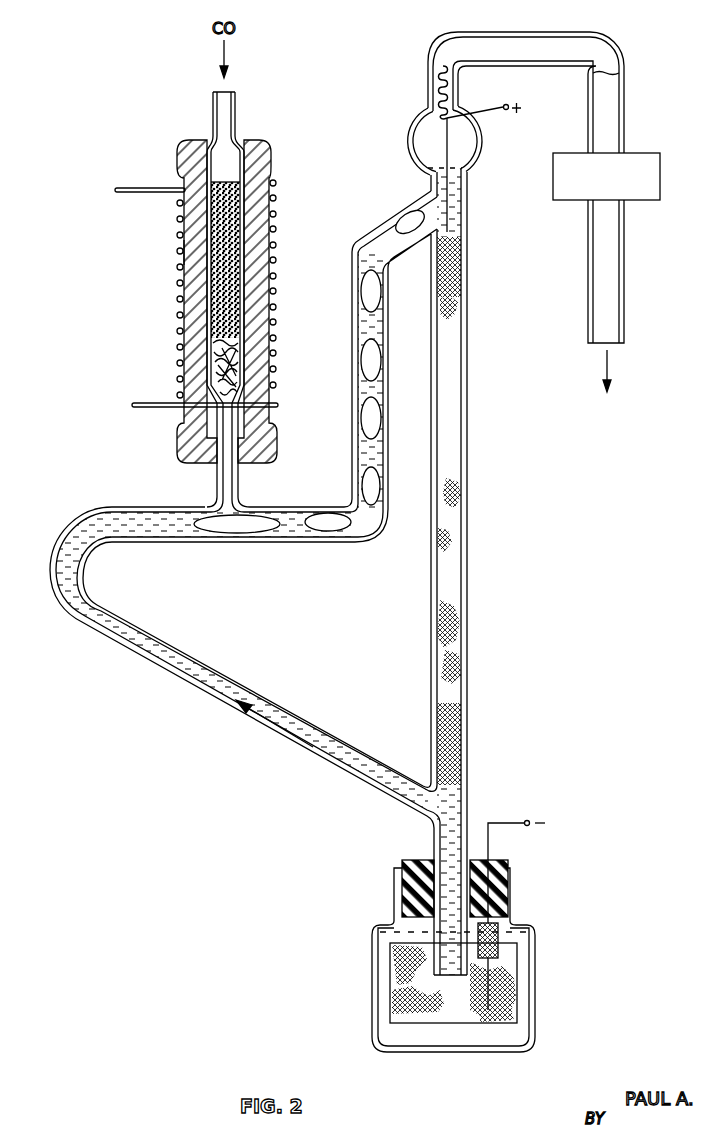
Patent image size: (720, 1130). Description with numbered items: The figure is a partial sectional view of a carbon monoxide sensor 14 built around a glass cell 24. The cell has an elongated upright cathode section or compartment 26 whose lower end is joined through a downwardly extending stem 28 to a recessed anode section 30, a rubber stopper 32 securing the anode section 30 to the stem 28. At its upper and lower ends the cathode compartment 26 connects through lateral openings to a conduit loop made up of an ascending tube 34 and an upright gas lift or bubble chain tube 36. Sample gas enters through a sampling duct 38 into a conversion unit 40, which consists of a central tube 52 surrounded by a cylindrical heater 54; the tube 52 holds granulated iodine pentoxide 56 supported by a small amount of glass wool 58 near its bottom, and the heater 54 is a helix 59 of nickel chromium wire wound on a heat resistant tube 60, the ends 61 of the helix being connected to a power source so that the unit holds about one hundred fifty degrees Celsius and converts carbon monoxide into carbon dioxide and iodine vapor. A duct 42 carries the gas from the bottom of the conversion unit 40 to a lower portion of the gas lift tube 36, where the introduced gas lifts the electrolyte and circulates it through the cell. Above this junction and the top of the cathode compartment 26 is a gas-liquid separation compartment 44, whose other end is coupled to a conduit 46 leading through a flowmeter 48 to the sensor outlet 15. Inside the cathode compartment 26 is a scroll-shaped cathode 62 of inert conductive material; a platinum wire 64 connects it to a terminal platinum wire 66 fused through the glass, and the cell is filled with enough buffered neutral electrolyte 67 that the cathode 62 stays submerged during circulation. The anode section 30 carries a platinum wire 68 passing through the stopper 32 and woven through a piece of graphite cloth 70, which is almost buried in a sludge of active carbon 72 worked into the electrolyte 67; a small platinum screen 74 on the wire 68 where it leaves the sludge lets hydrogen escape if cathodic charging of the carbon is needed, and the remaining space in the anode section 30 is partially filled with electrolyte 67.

The carbon monoxide sensor 14 is at (222, 766).
The sensor outlet 15 is at (625, 335).
The glass cell 24 is at (344, 226).
The cathode section or compartment 26 is at (468, 736).
The stem 28 is at (434, 847).
The anode section 30 is at (512, 907).
The rubber stopper 32 is at (506, 862).
The ascending tube 34 is at (251, 688).
The gas lift or bubble chain tube 36 is at (352, 335).
The sampling duct 38 is at (237, 127).
The conversion unit 40 is at (284, 280).
The duct 42 is at (240, 487).
The gas-liquid separation compartment 44 is at (409, 135).
The conduit 46 is at (528, 64).
The flowmeter 48 is at (662, 179).
The central tube 52 is at (246, 313).
The cylindrical heater 54 is at (178, 207).
The granulated iodine pentoxide 56 is at (215, 300).
The glass wool 58 is at (233, 378).
The helix 59 is at (180, 255).
The tube 60 is at (188, 335).
The ends of the helix 61 is at (127, 186).
The cathode 62 is at (456, 412).
The platinum wire 64 is at (447, 156).
The terminal platinum wire 66 is at (490, 109).
The electrolyte 67 is at (456, 806).
The platinum wire 68 is at (493, 895).
The graphite cloth 70 is at (500, 988).
The active carbon 72 is at (516, 1024).
The platinum screen 74 is at (500, 938).